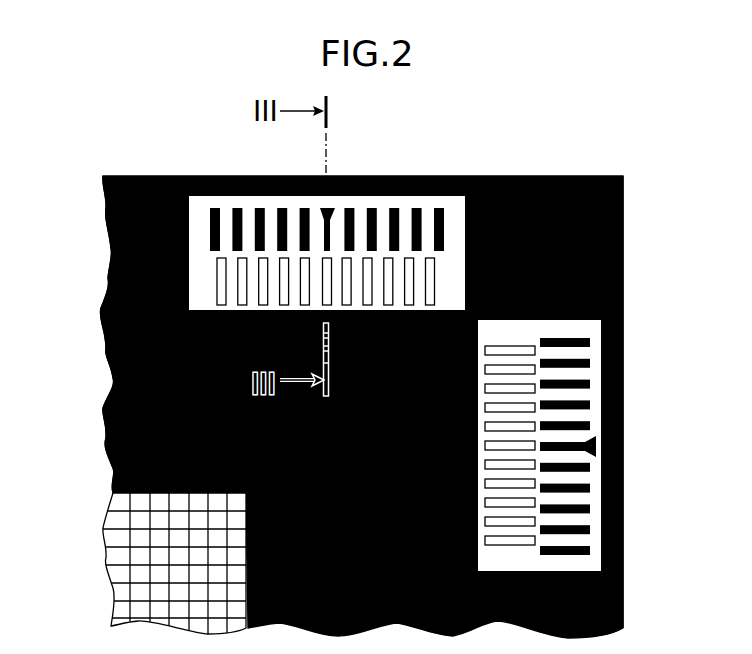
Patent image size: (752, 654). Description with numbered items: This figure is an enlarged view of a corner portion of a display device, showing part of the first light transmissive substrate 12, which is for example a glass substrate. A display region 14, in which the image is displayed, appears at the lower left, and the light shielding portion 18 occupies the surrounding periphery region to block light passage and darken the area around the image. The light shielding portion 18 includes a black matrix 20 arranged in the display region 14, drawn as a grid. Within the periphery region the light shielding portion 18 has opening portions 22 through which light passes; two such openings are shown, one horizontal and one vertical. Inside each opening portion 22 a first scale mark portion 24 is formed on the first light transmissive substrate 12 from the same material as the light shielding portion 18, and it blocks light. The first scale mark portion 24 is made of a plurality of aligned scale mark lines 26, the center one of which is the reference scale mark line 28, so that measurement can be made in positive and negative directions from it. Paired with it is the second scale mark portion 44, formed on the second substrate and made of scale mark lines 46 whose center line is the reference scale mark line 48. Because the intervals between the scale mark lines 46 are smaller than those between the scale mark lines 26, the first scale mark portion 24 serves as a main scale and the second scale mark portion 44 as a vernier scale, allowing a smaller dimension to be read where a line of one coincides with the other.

The first light transmissive substrate 12 is at (625, 533).
The display region 14 is at (107, 572).
The light shielding portion 18 is at (615, 580).
The black matrix 20 is at (125, 513).
The opening portions 22 is at (181, 215).
The first scale mark portion 24 is at (403, 337).
The scale mark lines 26 is at (448, 218).
The reference scale mark line 28 is at (319, 198).
The second scale mark portion 44 is at (439, 342).
The scale mark lines 46 is at (440, 275).
The reference scale mark line 48 is at (318, 297).